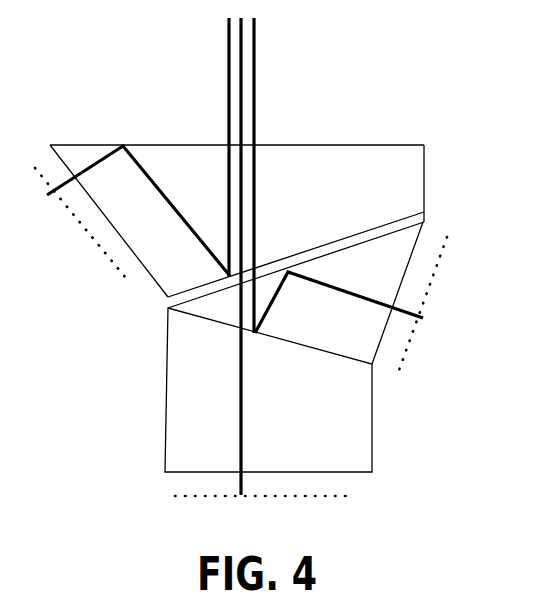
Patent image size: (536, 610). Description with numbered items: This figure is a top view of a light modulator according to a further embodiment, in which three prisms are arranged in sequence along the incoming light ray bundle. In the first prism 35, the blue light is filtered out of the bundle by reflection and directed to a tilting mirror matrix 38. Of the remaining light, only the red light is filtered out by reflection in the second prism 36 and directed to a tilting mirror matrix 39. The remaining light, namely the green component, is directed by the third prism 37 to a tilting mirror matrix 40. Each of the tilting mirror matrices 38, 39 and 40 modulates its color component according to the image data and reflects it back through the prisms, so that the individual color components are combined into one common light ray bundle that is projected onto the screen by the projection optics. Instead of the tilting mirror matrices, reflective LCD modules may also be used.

The first prism 35 is at (424, 152).
The second prism 36 is at (424, 240).
The third prism 37 is at (372, 437).
The tilting mirror matrix 38 is at (98, 245).
The tilting mirror matrix 39 is at (405, 355).
The tilting mirror matrix 40 is at (289, 500).